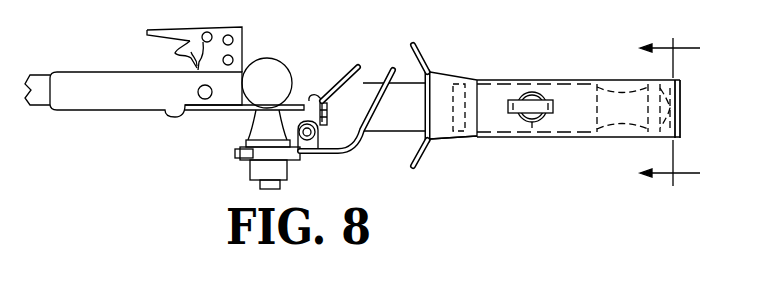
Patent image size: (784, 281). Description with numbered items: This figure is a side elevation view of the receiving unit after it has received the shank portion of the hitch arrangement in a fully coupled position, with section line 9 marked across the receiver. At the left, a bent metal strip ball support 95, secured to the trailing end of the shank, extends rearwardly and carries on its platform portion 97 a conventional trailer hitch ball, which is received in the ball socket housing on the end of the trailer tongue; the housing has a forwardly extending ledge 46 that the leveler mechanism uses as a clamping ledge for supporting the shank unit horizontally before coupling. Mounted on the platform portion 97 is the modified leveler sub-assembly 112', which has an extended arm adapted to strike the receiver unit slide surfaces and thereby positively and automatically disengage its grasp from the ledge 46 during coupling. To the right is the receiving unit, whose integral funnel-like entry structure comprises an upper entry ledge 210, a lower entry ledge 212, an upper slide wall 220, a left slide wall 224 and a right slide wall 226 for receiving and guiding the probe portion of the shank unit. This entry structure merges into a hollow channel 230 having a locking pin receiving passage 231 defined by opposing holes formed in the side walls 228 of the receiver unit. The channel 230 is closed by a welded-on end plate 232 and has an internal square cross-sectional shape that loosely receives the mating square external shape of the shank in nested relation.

The forwardly extending ledge 46 is at (303, 99).
The modified leveler sub-assembly 112' is at (343, 66).
The bent metal strip ball support 95 is at (362, 137).
The platform portion 97 is at (318, 156).
The upper entry ledge 210 is at (418, 58).
The lower entry ledge 212 is at (422, 160).
The upper slide wall 220 is at (451, 75).
The left slide wall 224 is at (449, 146).
The right slide wall 226 is at (446, 113).
The side wall 228 is at (608, 138).
The hollow channel 230 is at (572, 74).
The locking pin receiving passage 231 is at (532, 122).
The end plate 232 is at (678, 110).
The section line 9- 9 is at (670, 112).